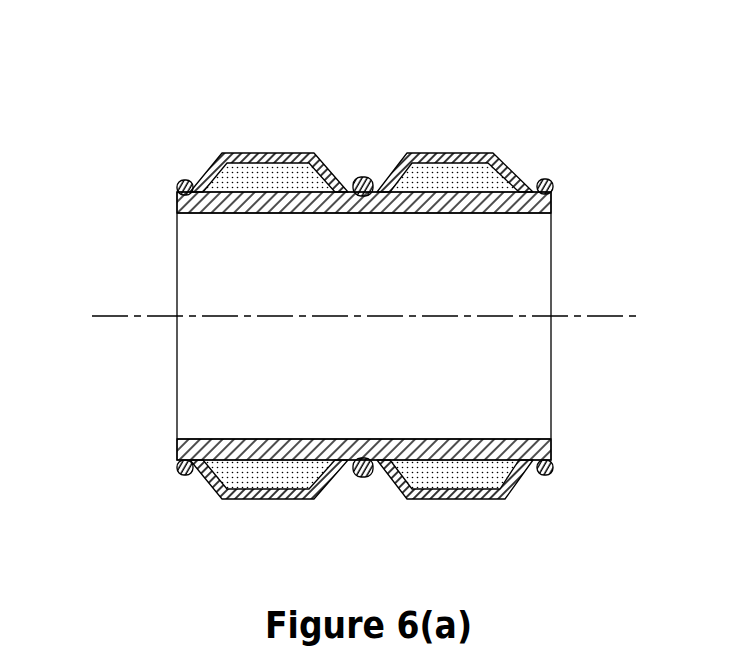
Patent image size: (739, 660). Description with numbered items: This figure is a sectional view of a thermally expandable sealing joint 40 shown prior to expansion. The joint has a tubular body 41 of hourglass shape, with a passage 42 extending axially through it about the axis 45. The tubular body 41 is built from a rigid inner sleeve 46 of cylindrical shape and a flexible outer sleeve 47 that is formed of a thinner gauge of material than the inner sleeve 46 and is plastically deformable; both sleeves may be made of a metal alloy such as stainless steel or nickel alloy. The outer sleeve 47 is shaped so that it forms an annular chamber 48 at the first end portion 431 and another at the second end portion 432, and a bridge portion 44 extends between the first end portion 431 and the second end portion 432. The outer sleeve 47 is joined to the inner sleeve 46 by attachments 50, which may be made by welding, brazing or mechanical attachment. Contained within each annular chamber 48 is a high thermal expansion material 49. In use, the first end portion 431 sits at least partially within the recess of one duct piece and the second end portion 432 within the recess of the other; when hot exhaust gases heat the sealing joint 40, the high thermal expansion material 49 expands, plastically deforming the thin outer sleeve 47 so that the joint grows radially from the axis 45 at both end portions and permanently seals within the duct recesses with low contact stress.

The thermally expandable sealing joint 40 is at (343, 298).
The tubular body 41 is at (421, 326).
The passage 42 is at (416, 391).
The first end portion 431 is at (354, 264).
The second end portion 432 is at (521, 272).
The bridge portion 44 is at (344, 176).
The axis 45 is at (594, 320).
The inner sleeve 46 is at (458, 214).
The outer sleeve 47 is at (480, 152).
The annular chamber 48 is at (486, 185).
The high thermal expansion material 49 is at (251, 173).
The attachments 50 is at (543, 480).